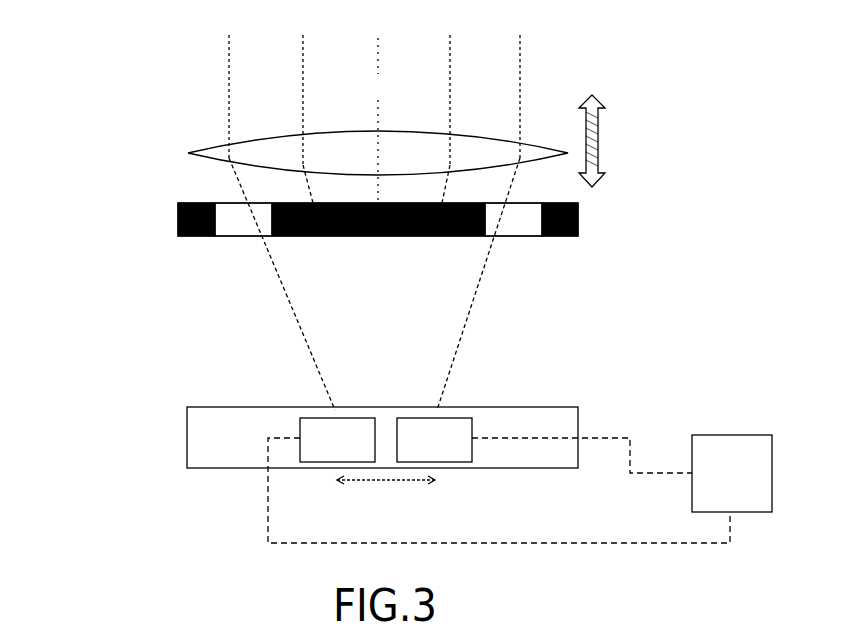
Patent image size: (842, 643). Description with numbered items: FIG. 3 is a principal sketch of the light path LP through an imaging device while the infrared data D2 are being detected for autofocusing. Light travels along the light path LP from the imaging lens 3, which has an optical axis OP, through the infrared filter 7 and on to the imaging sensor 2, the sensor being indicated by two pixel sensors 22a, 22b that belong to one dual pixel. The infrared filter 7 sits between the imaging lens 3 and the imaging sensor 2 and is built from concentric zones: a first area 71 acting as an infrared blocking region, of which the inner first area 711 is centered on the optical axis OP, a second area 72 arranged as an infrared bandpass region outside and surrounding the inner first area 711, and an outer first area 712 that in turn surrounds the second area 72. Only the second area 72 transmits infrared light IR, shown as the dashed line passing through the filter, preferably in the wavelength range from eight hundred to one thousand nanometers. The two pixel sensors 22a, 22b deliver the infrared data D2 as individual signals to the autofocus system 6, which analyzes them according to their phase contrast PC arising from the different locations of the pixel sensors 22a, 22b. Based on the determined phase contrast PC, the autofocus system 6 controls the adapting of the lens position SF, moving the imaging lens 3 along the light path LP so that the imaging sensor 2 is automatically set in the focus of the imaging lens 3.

The imaging sensor 2 is at (303, 437).
The pixel sensor 22a is at (337, 440).
The pixel sensor 22b is at (434, 440).
The imaging lens 3 is at (182, 154).
The autofocus system 6 is at (730, 428).
The infrared filter 7 is at (658, 215).
The first area 71 is at (172, 218).
The inner first area 711 is at (299, 245).
The outer first area 712 is at (562, 245).
The second area 72 is at (236, 245).
The infrared light IR is at (438, 362).
The light path LP is at (218, 85).
The optical axis OP is at (376, 120).
The adapting of the lens position SF is at (592, 128).
The phase contrast PC is at (386, 493).
The infrared data D2 is at (479, 490).